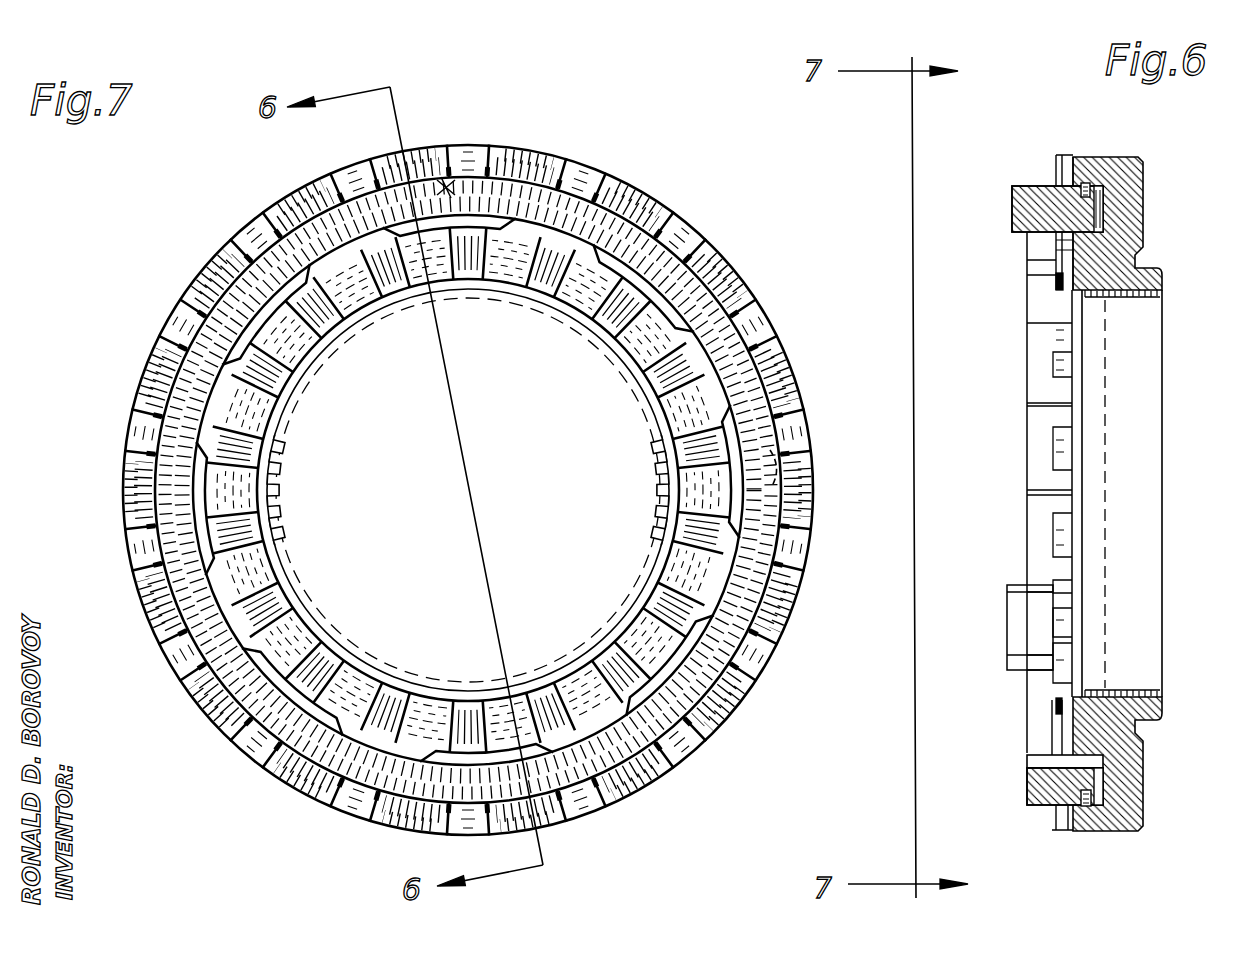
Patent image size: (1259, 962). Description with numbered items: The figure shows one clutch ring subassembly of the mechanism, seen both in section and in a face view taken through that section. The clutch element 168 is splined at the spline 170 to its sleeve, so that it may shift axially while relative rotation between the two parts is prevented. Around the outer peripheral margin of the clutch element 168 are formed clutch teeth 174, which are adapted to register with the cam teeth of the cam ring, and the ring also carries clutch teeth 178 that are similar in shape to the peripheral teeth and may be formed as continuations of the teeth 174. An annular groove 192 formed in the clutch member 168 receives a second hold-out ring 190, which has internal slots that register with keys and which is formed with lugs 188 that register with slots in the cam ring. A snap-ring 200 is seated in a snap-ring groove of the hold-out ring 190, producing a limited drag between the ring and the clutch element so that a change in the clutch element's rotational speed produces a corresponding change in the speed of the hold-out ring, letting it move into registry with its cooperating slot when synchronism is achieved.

In FIG. 7, the clutch element 168 is at (728, 222).
In FIG. 6, the clutch element 168 is at (1138, 168).
In FIG. 7, the spline 170 is at (660, 472).
In FIG. 6, the spline 170 is at (1160, 302).
In FIG. 7, the clutch teeth 174 is at (581, 173).
In FIG. 6, the clutch teeth 174 is at (1062, 155).
In FIG. 7, the clutch teeth 178 is at (528, 292).
In FIG. 6, the clutch teeth 178 is at (1058, 243).
In FIG. 7, the lugs 188 is at (449, 186).
In FIG. 6, the lugs 188 is at (1022, 212).
In FIG. 6, the second hold-out ring 190 is at (1045, 184).
In FIG. 6, the annular groove 192 is at (1099, 214).
In FIG. 7, the snap-ring 200 is at (782, 469).
In FIG. 6, the snap-ring 200 is at (1087, 181).